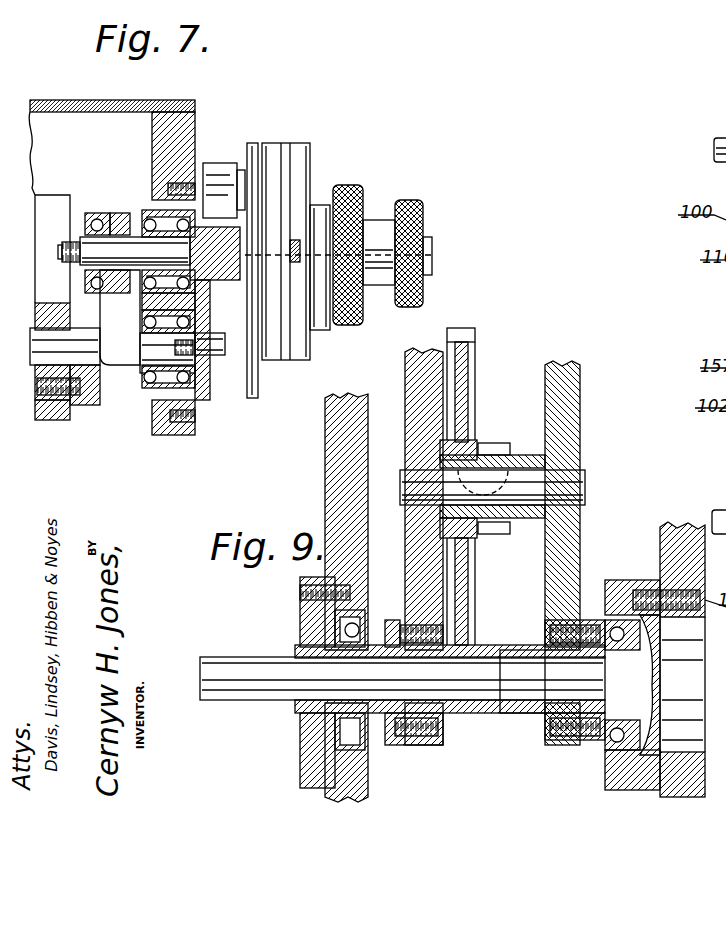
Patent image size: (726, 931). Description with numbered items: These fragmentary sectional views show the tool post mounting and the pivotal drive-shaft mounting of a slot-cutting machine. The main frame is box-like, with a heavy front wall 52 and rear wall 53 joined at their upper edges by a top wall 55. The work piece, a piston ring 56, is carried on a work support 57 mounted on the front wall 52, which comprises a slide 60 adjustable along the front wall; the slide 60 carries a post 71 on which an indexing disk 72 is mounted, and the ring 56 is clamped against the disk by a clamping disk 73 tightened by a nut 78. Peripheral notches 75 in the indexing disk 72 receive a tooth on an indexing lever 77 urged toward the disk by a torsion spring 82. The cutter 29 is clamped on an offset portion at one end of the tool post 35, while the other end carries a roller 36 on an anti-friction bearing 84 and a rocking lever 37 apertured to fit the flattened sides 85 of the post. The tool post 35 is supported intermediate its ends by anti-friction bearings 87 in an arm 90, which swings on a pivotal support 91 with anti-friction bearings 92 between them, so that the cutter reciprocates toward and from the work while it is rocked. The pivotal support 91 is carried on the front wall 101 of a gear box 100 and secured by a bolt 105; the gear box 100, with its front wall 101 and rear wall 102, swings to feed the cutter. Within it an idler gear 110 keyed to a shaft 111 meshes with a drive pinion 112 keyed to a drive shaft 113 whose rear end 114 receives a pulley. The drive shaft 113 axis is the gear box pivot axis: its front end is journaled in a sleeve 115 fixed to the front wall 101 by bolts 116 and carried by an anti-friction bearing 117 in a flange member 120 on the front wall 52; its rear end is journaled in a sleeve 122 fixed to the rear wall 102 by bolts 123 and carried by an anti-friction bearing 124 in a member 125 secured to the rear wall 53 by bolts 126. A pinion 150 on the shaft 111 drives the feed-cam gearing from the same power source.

In FIG. 7, the cutter 29 is at (298, 240).
In FIG. 7, the tool post 35 is at (242, 300).
In FIG. 7, the roller 36 is at (96, 213).
In FIG. 7, the lever 37 is at (140, 212).
In FIG. 7, the front wall 52 is at (178, 432).
In FIG. 9, the rear wall 53 is at (330, 444).
In FIG. 7, the top wall 55 is at (148, 100).
In FIG. 7, the piston ring 56 is at (292, 362).
In FIG. 7, the work support 57 is at (306, 134).
In FIG. 7, the slide 60 is at (208, 163).
In FIG. 7, the post 71 is at (434, 243).
In FIG. 7, the indexing disk 72 is at (275, 362).
In FIG. 7, the clamping disk 73 is at (322, 328).
In FIG. 7, the peripheral notches 75 is at (246, 213).
In FIG. 7, the indexing lever 77 is at (253, 398).
In FIG. 7, the nut 78 is at (355, 322).
In FIG. 7, the torsion spring 82 is at (240, 170).
In FIG. 7, the anti-friction bearing 84 is at (80, 245).
In FIG. 7, the flattened sides 85 is at (118, 213).
In FIG. 7, the anti-friction bearings 87 is at (144, 298).
In FIG. 7, the arm 90 is at (162, 195).
In FIG. 7, the pivotal support 91 is at (128, 360).
In FIG. 7, the anti-friction bearings 92 is at (152, 390).
In FIG. 9, the gear box 100 is at (592, 420).
In FIG. 7, the front wall 101 is at (50, 418).
In FIG. 9, the front wall 101 is at (582, 525).
In FIG. 9, the rear wall 102 is at (406, 545).
In FIG. 7, the bolt 105 is at (80, 405).
In FIG. 9, the idler gear 110 is at (476, 342).
In FIG. 9, the shaft 111 is at (530, 492).
In FIG. 9, the drive pinion 112 is at (476, 725).
In FIG. 9, the drive shaft 113 is at (492, 692).
In FIG. 9, the rear end of drive shaft 114 is at (256, 688).
In FIG. 9, the sleeve 115 is at (565, 742).
In FIG. 9, the bolts 116 is at (596, 748).
In FIG. 9, the anti-friction bearing 117 is at (605, 600).
In FIG. 9, the flange member 120 is at (655, 580).
In FIG. 9, the sleeve 122 is at (380, 745).
In FIG. 9, the bolts 123 is at (400, 620).
In FIG. 9, the anti-friction bearing 124 is at (335, 642).
In FIG. 9, the member 125 is at (325, 627).
In FIG. 9, the bolts 126 is at (300, 600).
In FIG. 9, the pinion 150 is at (500, 535).